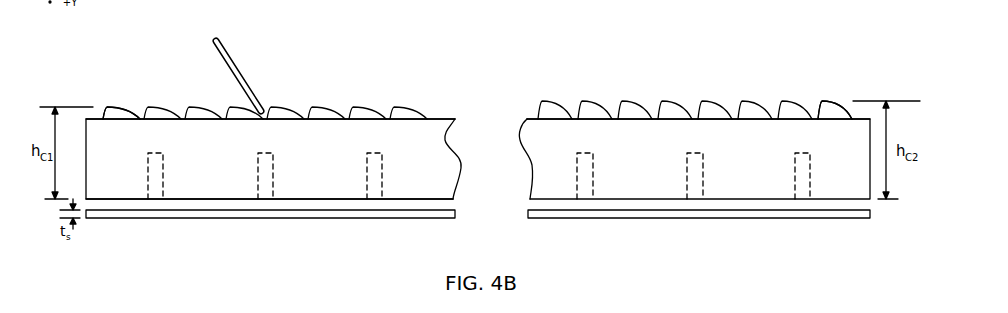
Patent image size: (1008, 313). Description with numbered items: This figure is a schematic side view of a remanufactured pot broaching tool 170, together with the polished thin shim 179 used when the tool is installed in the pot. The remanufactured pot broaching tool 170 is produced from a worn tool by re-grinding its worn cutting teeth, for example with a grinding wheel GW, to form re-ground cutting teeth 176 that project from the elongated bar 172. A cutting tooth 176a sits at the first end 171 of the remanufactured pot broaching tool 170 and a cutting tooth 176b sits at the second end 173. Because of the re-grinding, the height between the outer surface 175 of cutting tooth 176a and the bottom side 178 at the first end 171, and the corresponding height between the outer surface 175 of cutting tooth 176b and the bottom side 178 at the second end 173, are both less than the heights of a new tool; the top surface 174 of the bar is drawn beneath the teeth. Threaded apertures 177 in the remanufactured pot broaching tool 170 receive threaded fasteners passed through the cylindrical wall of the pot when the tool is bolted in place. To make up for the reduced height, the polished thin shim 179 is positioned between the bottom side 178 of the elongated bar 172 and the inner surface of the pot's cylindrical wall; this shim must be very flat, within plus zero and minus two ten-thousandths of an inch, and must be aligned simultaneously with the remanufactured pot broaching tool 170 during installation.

The remanufactured pot broaching tool 170 is at (582, 69).
The first end 171 is at (86, 167).
The elongated bar 172 is at (460, 205).
The second end 173 is at (870, 147).
The top surface 174 is at (440, 112).
The outer surface 175 is at (113, 107).
The re-ground cutting teeth 176 is at (321, 108).
The cutting tooth 176a is at (120, 110).
The cutting tooth 176b is at (834, 108).
The threaded aperture 177 is at (164, 178).
The bottom side 178 is at (335, 200).
The polished thin shim 179 is at (563, 212).
The grinding wheel GW is at (236, 61).